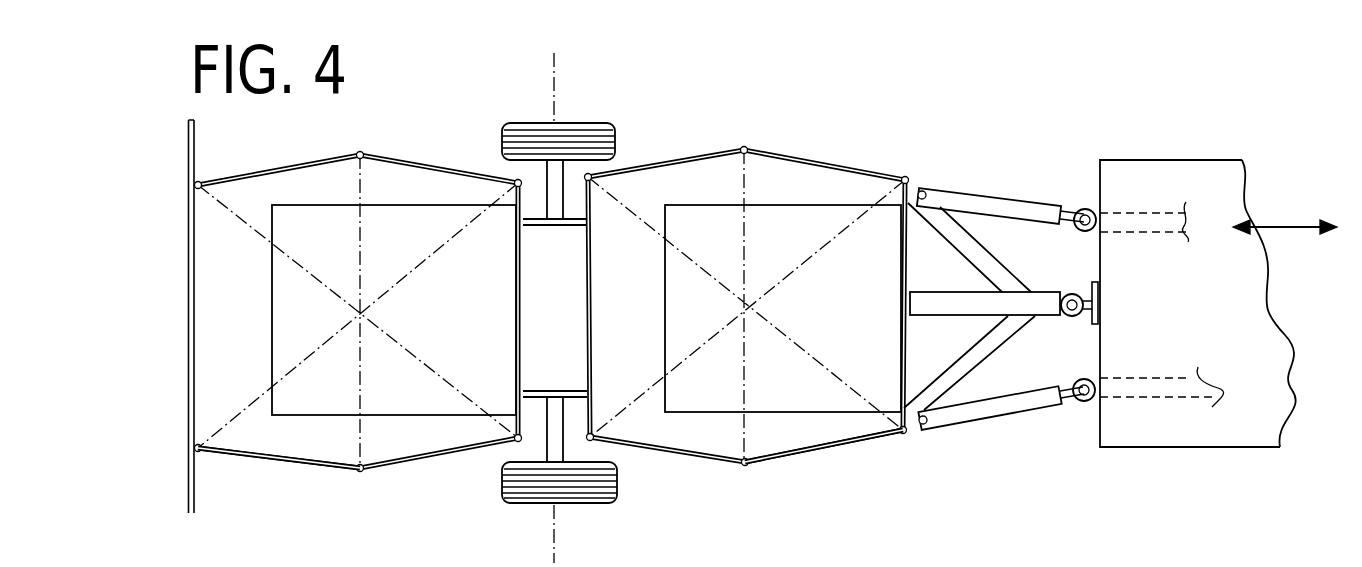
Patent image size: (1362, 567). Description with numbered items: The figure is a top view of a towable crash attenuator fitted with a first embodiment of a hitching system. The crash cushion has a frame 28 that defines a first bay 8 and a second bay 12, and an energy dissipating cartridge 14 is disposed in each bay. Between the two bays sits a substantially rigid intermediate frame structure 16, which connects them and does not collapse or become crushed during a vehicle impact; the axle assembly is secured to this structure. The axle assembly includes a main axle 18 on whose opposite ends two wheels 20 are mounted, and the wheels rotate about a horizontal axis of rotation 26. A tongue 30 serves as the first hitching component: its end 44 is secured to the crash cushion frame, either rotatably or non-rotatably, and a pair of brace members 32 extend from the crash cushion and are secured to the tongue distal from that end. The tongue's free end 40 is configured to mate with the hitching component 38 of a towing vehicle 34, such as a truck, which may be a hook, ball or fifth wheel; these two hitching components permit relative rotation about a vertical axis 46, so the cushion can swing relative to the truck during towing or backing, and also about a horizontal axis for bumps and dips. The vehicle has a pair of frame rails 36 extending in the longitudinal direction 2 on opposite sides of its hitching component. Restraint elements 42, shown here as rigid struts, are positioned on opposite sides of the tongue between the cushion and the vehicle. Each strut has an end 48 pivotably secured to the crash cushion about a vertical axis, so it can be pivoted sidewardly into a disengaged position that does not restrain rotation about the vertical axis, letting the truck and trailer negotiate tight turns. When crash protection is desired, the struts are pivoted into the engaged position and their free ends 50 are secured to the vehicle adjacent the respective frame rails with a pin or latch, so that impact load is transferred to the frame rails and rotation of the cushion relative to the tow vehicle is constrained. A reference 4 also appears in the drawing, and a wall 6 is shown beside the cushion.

The longitudinal direction 2 is at (1285, 214).
The rear frame member 4 is at (900, 437).
The wall 6 is at (190, 360).
The first bay 8 is at (403, 150).
The second bay 12 is at (822, 148).
The energy dissipating cartridges 14 is at (468, 299).
The frame structure 16 is at (552, 392).
The main axle 18 is at (547, 454).
The wheels 20 is at (605, 123).
The horizontal axis of rotation 26 is at (554, 73).
The frame 28 is at (327, 468).
The tongue 30 is at (991, 291).
The brace members 32 is at (980, 250).
The vehicle 34 is at (1245, 291).
The frame rails 36 is at (1150, 218).
The hitching component 38 is at (1090, 324).
The free end 40 is at (1068, 290).
The restraint elements 42 is at (962, 191).
The end 44 is at (912, 300).
The vertical axis 46 is at (1069, 318).
The end 48 is at (920, 190).
The free ends 50 is at (1083, 208).